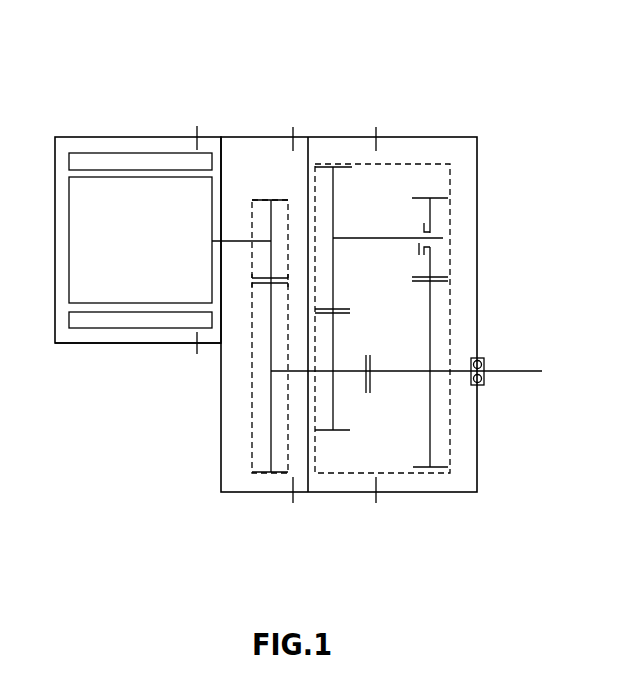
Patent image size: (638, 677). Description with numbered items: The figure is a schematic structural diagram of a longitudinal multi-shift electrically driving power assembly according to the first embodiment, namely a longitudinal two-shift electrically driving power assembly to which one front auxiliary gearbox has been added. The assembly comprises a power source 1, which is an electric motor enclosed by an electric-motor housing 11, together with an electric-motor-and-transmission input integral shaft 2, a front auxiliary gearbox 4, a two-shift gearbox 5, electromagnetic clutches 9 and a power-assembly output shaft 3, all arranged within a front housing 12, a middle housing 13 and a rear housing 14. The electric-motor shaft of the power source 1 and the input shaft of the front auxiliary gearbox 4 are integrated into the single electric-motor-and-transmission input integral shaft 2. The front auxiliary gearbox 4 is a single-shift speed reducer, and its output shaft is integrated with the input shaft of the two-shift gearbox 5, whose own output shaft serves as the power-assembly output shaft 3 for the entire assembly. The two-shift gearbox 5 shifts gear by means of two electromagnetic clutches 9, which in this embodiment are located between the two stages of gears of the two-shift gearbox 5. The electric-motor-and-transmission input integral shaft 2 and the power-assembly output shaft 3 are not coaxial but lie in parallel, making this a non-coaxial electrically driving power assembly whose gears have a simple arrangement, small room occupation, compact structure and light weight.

The power source 1 is at (106, 210).
The electric-motor-and-transmission input integral shaft 2 is at (242, 241).
The power-assembly output shaft 3 is at (508, 372).
The front auxiliary gearbox 4 is at (282, 198).
The two-shift gearbox 5 is at (350, 164).
The electromagnetic clutches 9 is at (418, 238).
The electric-motor housing 11 is at (131, 344).
The front housing 12 is at (274, 492).
The middle housing 13 is at (324, 492).
The rear housing 14 is at (428, 492).